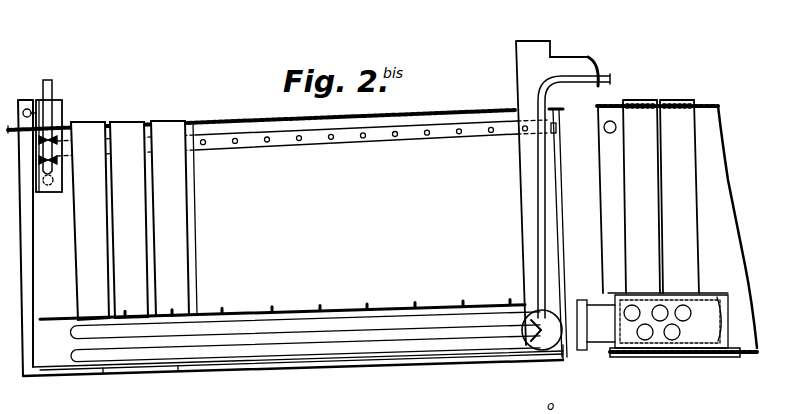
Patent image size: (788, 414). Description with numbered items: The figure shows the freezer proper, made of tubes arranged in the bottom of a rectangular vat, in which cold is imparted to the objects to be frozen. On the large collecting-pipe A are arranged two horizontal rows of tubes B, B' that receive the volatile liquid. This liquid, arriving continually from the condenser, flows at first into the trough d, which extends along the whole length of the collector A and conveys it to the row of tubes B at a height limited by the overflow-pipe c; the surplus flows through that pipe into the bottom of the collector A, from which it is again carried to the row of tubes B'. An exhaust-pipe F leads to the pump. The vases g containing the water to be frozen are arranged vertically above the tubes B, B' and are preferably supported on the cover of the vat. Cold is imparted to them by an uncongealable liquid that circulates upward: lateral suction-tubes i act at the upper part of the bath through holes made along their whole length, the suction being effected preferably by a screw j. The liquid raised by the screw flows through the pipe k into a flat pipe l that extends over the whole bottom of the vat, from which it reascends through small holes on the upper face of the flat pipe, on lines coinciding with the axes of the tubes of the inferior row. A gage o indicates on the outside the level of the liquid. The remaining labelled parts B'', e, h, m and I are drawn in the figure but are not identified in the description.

The collecting-pipe A is at (559, 338).
The upper row of tubes B is at (370, 339).
The lower row of tubes B' is at (305, 363).
The perforated plate holes B'' is at (657, 344).
The overflow-pipe c is at (563, 193).
The trough d is at (549, 320).
The tube end e is at (537, 350).
The exhaust-pipe F is at (518, 149).
The vases g is at (134, 220).
The toothed bar h is at (47, 318).
The lateral suction-tubes i is at (62, 170).
The screw j is at (58, 143).
The pipe k is at (663, 224).
The flat pipe l is at (47, 369).
The bottom bar lugs m is at (103, 368).
The gage o is at (588, 305).
The tube elbow I is at (573, 63).